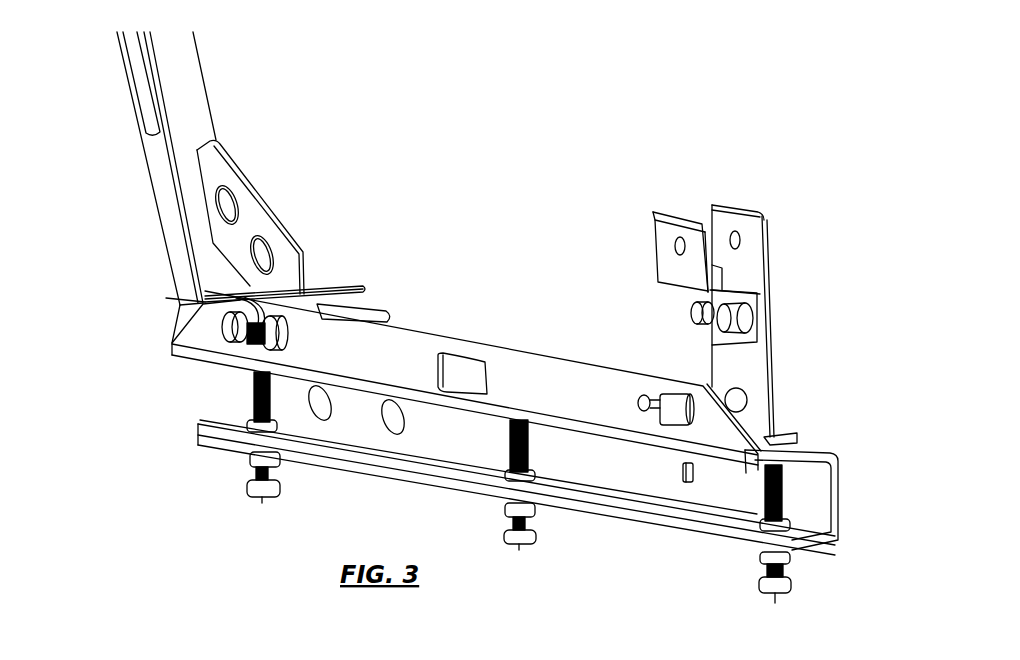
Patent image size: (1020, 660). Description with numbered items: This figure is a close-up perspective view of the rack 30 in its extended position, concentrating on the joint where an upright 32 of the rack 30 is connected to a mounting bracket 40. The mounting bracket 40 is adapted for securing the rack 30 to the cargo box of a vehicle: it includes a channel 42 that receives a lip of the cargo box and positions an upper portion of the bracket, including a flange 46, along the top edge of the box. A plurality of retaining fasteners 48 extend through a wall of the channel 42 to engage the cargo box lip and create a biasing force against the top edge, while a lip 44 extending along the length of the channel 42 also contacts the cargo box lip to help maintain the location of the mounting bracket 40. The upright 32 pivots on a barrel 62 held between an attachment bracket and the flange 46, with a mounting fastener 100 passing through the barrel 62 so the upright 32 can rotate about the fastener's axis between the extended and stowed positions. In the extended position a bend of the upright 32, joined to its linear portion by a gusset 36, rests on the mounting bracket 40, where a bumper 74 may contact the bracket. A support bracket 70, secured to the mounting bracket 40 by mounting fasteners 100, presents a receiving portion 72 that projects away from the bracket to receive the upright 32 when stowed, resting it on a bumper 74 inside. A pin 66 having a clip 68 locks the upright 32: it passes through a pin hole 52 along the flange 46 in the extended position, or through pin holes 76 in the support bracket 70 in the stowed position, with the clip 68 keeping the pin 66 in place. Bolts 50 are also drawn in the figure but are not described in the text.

The rack 30 is at (108, 88).
The upright 32 is at (158, 168).
The gusset 36 is at (250, 200).
The mounting bracket 40 is at (476, 328).
The channel 42 is at (818, 487).
The lip 44 is at (640, 513).
The flange 46 is at (548, 372).
The retaining fasteners 48 is at (262, 499).
The bolts 50 is at (252, 420).
The pin hole 52 is at (208, 320).
The barrel 62 is at (348, 308).
The pin 66 is at (233, 333).
The clip 68 is at (332, 290).
The support bracket 70 is at (755, 355).
The receiving portion 72 is at (701, 203).
The bumper 74 is at (722, 268).
The pin holes 76 is at (673, 243).
The mounting fastener 100 is at (285, 330).